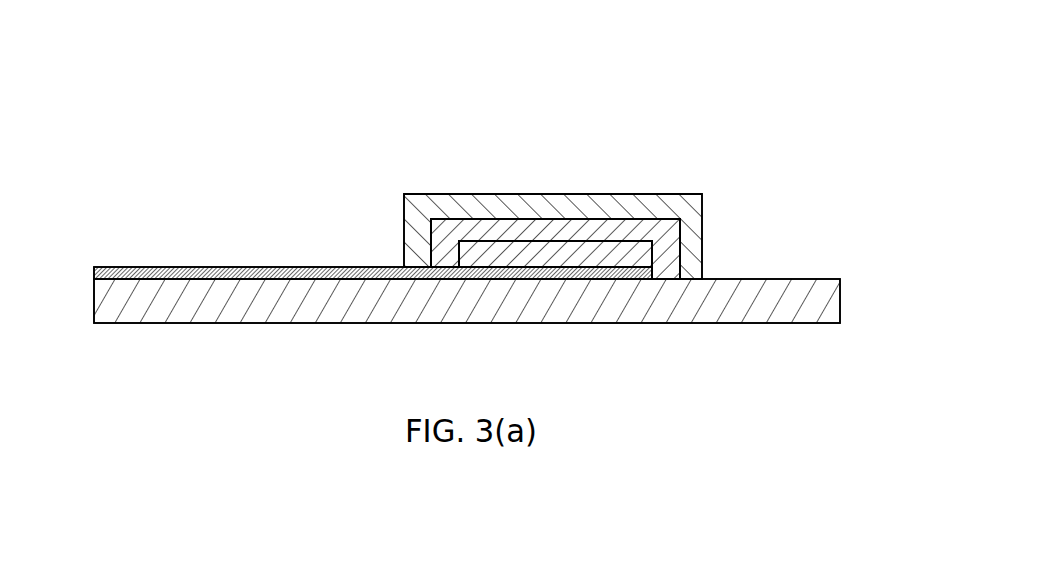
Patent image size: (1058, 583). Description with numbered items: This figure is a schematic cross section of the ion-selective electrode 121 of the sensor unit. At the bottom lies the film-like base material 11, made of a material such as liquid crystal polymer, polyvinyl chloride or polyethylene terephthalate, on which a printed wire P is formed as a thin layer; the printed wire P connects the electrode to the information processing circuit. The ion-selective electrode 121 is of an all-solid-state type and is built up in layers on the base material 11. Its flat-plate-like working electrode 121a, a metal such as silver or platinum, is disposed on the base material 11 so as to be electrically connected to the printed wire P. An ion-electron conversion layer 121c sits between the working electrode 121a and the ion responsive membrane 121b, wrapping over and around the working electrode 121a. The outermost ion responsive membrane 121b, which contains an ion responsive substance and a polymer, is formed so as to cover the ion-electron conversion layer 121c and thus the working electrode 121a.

The base material 11 is at (840, 303).
The printed wire P is at (94, 273).
The ion-selective electrode 121 is at (606, 147).
The working electrode 121a is at (569, 241).
The ion responsive membrane 121b is at (442, 194).
The ion-electron conversion layer 121c is at (503, 219).